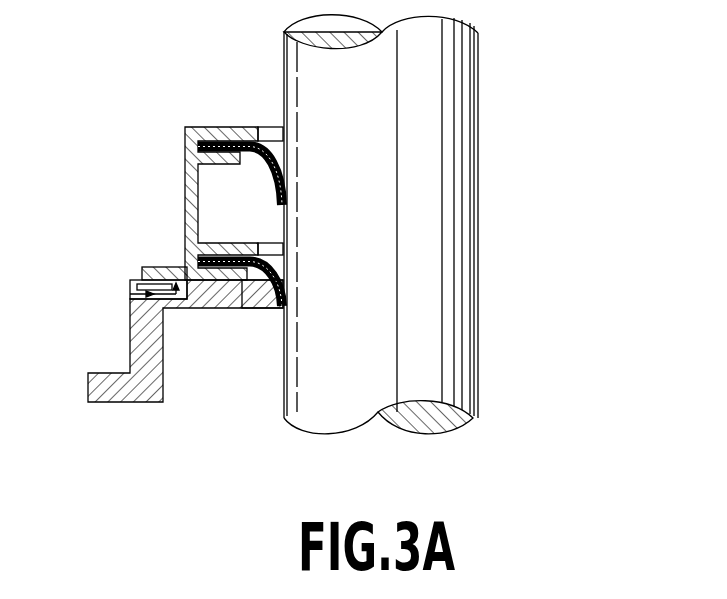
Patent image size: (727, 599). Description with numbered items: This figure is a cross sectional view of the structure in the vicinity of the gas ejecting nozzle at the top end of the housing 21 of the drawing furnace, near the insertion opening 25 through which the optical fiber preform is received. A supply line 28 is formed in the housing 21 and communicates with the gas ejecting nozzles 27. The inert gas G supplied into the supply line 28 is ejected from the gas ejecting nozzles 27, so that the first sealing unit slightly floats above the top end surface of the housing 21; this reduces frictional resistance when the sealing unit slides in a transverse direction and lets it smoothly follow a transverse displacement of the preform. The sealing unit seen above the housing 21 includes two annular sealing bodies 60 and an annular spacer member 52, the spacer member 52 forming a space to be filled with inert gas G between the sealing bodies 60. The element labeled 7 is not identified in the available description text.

The rotary shaft 7 is at (482, 193).
The housing 21 is at (168, 376).
The insertion opening 25 is at (242, 310).
The gas ejecting nozzle 27 is at (140, 277).
The supply line 28 is at (130, 303).
The annular spacer member 52 is at (185, 180).
The annular sealing body 60 is at (252, 138).
The inert gas G is at (126, 295).